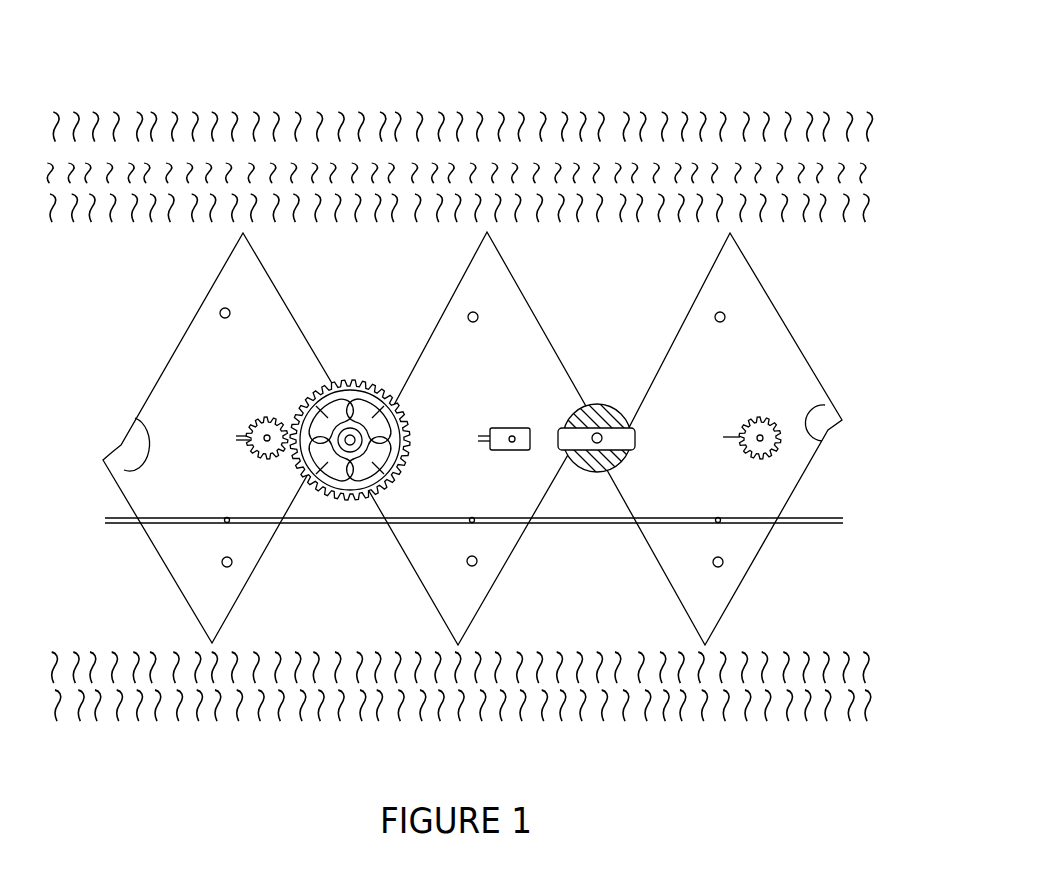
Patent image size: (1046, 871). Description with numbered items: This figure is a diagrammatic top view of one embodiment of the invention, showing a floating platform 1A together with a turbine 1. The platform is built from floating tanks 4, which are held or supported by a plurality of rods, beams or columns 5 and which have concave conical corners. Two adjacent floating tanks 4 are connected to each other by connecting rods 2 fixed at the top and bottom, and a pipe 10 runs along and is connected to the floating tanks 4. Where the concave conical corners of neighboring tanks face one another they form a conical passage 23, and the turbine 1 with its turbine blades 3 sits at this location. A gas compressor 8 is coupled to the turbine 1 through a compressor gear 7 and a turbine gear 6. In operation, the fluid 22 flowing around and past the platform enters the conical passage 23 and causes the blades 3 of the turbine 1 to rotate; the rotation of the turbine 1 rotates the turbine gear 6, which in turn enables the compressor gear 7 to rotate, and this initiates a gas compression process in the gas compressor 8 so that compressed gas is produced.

The turbine 1 is at (607, 415).
The floating platform 1A is at (236, 438).
The connecting rods 2 is at (632, 456).
The turbine blades 3 is at (582, 462).
The floating tanks 4 is at (298, 324).
The rods/beams/columns 5 is at (482, 310).
The turbine gear 6 is at (411, 459).
The compressor gear 7 is at (246, 455).
The gas compressor 8 is at (505, 424).
The pipe 10 is at (335, 526).
The fluid 22 is at (668, 108).
The conical passage 23 is at (597, 340).